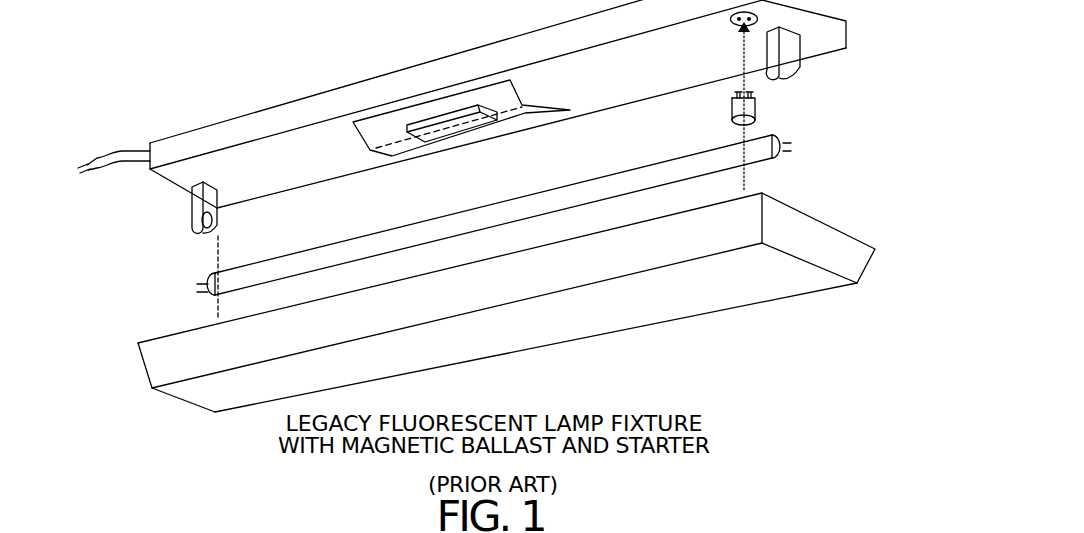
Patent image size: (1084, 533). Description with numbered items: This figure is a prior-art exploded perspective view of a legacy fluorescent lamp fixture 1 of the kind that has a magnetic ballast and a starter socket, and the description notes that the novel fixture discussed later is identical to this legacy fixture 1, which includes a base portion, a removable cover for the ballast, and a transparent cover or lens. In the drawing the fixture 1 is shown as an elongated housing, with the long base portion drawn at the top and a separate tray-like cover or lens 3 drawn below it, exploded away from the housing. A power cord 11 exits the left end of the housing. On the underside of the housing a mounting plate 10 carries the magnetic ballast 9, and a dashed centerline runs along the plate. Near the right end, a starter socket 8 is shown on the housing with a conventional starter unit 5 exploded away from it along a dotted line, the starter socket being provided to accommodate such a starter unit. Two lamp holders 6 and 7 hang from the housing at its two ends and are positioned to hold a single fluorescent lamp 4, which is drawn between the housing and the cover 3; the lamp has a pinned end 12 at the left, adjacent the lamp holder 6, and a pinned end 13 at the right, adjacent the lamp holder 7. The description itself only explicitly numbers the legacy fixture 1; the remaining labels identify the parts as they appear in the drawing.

The legacy fixture 1 is at (172, 199).
The fixture housing tray / reflector 3 is at (457, 365).
The fluorescent lamp 4 is at (344, 242).
The starter 5 is at (732, 112).
The lamp holder 6 is at (215, 230).
The lamp holder 7 is at (801, 78).
The starter socket 8 is at (731, 21).
The magnetic ballast 9 is at (481, 125).
The ballast mounting plate 10 is at (415, 156).
The power cord 11 is at (121, 154).
The lamp end pins 12 is at (212, 275).
The lamp end pins 13 is at (776, 135).